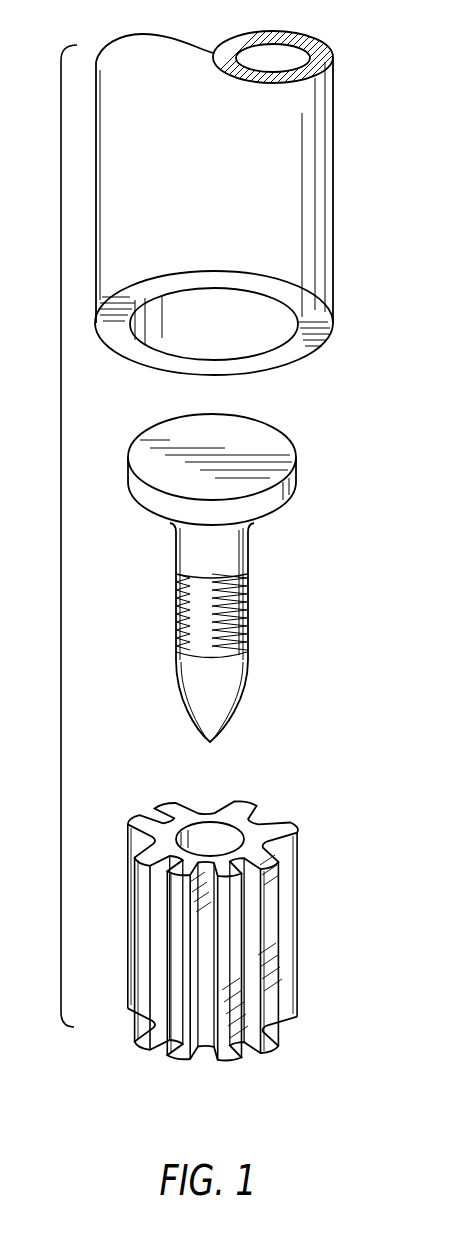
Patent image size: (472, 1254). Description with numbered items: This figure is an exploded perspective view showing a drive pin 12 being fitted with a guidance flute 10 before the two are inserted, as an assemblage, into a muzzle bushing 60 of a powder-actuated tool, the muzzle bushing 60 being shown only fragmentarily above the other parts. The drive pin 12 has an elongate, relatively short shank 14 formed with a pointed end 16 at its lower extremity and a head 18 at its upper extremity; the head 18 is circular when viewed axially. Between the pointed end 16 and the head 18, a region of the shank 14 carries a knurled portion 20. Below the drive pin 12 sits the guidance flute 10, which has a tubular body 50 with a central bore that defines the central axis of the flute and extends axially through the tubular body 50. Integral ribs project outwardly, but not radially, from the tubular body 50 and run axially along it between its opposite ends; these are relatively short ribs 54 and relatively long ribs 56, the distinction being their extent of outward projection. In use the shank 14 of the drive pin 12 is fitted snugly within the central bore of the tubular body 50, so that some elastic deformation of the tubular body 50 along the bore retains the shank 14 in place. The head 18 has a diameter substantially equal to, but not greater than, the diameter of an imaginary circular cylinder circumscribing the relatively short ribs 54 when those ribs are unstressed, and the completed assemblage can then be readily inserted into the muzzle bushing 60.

The guidance flute 10 is at (218, 929).
The drive pin 12 is at (229, 571).
The shank 14 is at (248, 555).
The pointed end 16 is at (220, 703).
The head 18 is at (280, 440).
The knurled portion 20 is at (248, 643).
The tubular body 50 is at (229, 824).
The relatively short ribs 54 is at (188, 813).
The relatively long ribs 56 is at (233, 801).
The muzzle bushing 60 is at (328, 158).